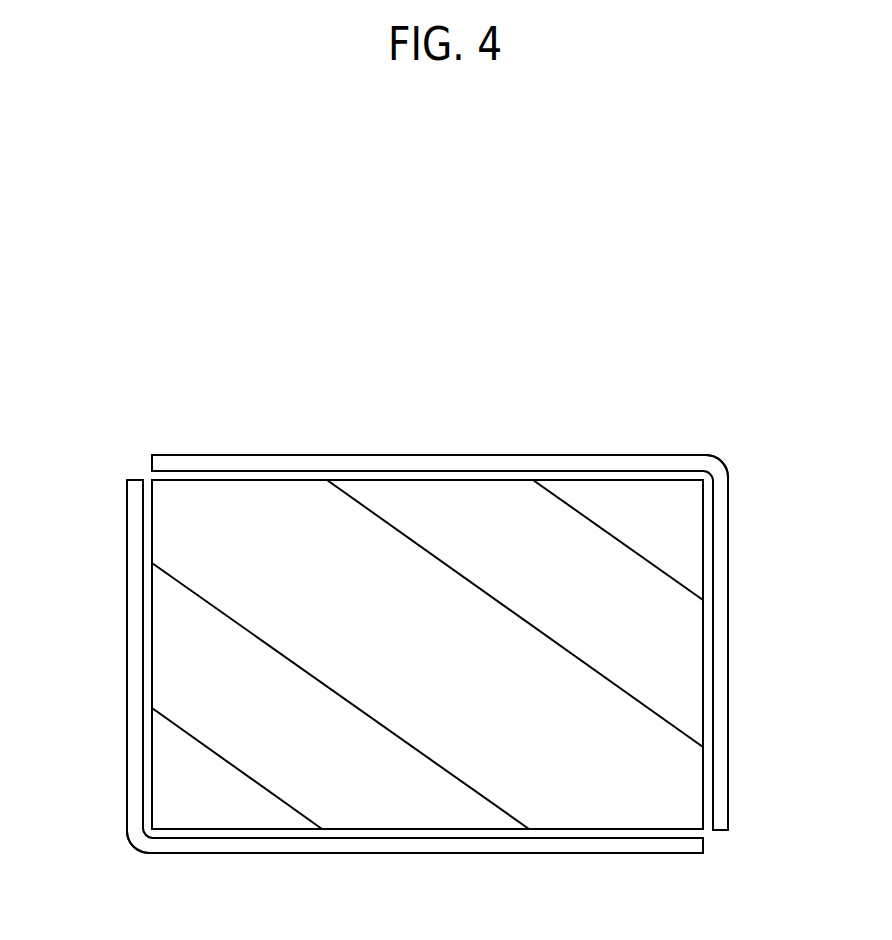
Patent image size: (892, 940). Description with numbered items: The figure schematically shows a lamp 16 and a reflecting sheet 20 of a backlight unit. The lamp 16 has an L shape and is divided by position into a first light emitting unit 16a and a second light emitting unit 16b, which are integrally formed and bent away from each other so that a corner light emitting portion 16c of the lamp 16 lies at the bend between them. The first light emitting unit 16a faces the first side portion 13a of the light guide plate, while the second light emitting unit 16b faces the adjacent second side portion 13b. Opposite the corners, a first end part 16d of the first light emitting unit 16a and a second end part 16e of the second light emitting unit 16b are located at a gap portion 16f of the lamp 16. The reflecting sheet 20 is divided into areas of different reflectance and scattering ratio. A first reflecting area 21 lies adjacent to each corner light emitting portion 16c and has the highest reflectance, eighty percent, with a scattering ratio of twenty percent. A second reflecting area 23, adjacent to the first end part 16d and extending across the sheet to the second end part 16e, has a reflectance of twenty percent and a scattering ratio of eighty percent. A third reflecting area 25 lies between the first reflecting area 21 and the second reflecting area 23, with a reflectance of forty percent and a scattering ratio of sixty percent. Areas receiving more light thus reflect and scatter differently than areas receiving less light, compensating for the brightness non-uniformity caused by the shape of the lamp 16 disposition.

The first side portion 13a is at (152, 548).
The second side portion 13b is at (652, 832).
The lamp 16 is at (321, 862).
The first light emitting unit 16a is at (130, 652).
The second light emitting unit 16b is at (505, 850).
The corner light emitting portion 16c is at (718, 462).
The first end part 16d is at (138, 478).
The second end part 16e is at (145, 462).
The gap portion 16f is at (138, 467).
The reflecting sheet 20 is at (716, 522).
The first reflecting area 21 is at (245, 810).
The second reflecting area 23 is at (601, 810).
The third reflecting area 25 is at (438, 810).